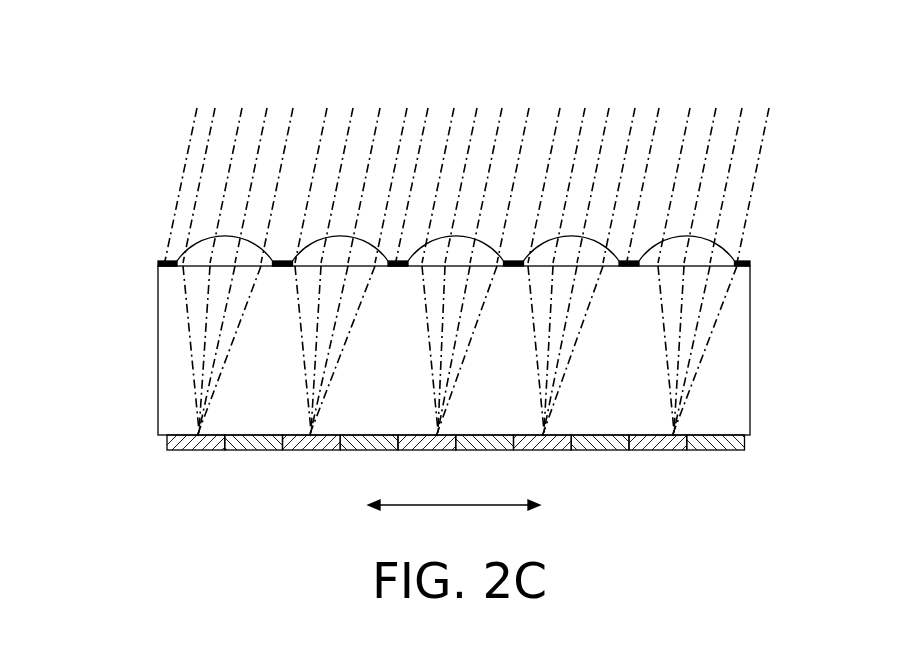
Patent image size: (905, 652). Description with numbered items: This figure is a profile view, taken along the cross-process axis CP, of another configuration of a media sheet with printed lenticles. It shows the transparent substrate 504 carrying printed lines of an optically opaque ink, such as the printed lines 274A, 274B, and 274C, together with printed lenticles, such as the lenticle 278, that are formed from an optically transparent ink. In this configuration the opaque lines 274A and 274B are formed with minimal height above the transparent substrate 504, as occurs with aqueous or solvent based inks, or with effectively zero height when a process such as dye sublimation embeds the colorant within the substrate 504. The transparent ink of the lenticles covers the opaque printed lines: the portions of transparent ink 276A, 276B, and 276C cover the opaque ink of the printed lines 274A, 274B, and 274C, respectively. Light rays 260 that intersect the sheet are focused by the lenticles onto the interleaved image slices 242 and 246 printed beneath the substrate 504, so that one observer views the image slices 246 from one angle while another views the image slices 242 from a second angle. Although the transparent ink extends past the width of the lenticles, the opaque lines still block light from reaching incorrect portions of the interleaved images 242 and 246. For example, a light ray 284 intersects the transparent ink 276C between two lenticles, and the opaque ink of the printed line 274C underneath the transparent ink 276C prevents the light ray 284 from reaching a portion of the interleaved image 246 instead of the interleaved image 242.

The light rays 260 is at (158, 168).
The portion of transparent ink 276A is at (163, 258).
The portion of transparent ink 276B is at (283, 260).
The portion of transparent ink 276C is at (393, 260).
The printed line of optically opaque ink 274A is at (160, 270).
The printed line of optically opaque ink 274B is at (281, 268).
The printed line of optically opaque ink 274C is at (397, 268).
The lenticle 278 is at (258, 268).
The light ray 284 is at (430, 128).
The transparent substrate 504 is at (158, 352).
The interleaved image slices 242 is at (196, 452).
The interleaved image slices 246 is at (253, 452).
The cross-process axis CP is at (435, 508).